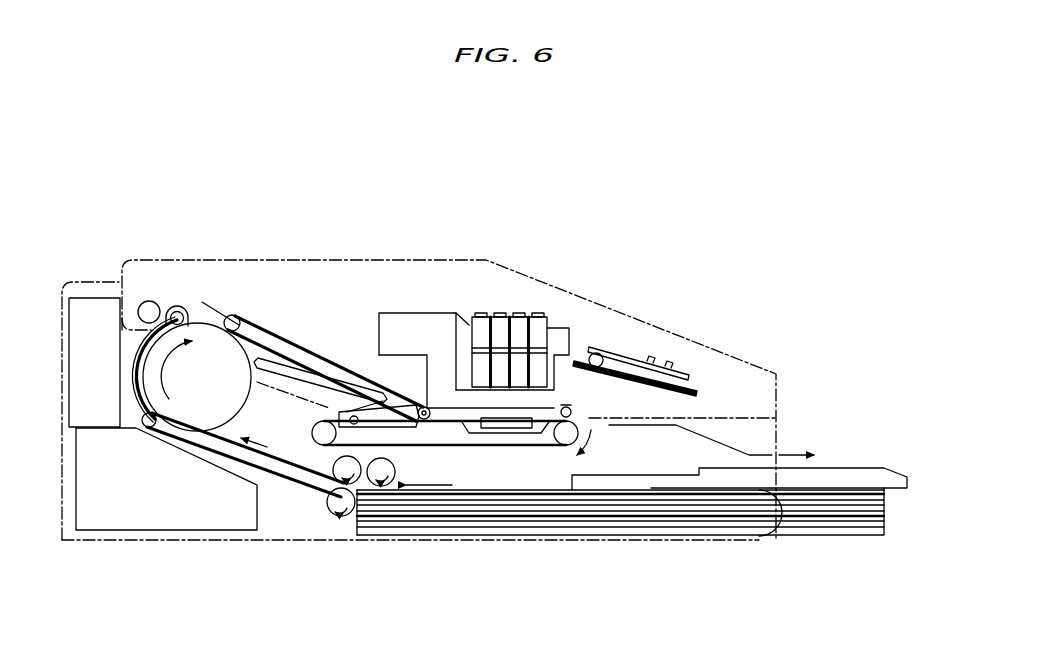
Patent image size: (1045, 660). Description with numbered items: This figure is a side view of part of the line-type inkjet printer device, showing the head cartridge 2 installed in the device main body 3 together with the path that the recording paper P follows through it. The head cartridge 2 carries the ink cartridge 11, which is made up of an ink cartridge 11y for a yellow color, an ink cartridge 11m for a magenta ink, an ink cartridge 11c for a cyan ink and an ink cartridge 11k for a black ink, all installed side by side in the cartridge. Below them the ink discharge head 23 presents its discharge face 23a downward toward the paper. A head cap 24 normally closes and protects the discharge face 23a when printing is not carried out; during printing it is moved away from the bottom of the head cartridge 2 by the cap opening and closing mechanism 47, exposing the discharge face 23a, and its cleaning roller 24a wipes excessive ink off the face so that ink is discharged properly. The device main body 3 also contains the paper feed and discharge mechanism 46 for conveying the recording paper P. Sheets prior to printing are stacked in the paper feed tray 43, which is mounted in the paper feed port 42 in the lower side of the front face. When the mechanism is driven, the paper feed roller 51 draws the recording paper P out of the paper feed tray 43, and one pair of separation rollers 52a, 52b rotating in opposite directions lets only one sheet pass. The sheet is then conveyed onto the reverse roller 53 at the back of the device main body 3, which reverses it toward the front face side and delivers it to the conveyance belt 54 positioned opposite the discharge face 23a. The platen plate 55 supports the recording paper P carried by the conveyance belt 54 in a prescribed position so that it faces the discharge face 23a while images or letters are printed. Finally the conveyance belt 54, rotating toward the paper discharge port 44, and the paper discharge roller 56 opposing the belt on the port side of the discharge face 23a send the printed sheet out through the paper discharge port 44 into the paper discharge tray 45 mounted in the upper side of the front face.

The head cartridge 2 is at (392, 330).
The device main body 3 is at (138, 544).
The ink cartridge 11 is at (505, 264).
The ink cartridge for a yellow color 11y is at (484, 322).
The ink cartridge for a magenta ink 11m is at (499, 322).
The ink cartridge for a cyan ink 11c is at (516, 322).
The ink cartridge for a black ink 11k is at (536, 322).
The ink discharge head 23 is at (473, 398).
The discharge face 23a is at (385, 392).
The head cap 24 is at (582, 358).
The cleaning roller 24a is at (598, 354).
The paper feed port 42 is at (780, 542).
The paper feed tray 43 is at (887, 508).
The paper discharge port 44 is at (780, 432).
The paper discharge tray 45 is at (878, 467).
The paper feed and discharge mechanism 46 is at (256, 322).
The cap opening and closing mechanism 47 is at (706, 380).
The paper feed roller 51 is at (397, 472).
The separation roller 52a is at (347, 518).
The separation roller 52b is at (314, 474).
The reverse roller 53 is at (200, 412).
The conveyance belt 54 is at (554, 445).
The platen plate 55 is at (503, 429).
The paper discharge roller 56 is at (576, 409).
The recording paper P is at (652, 516).